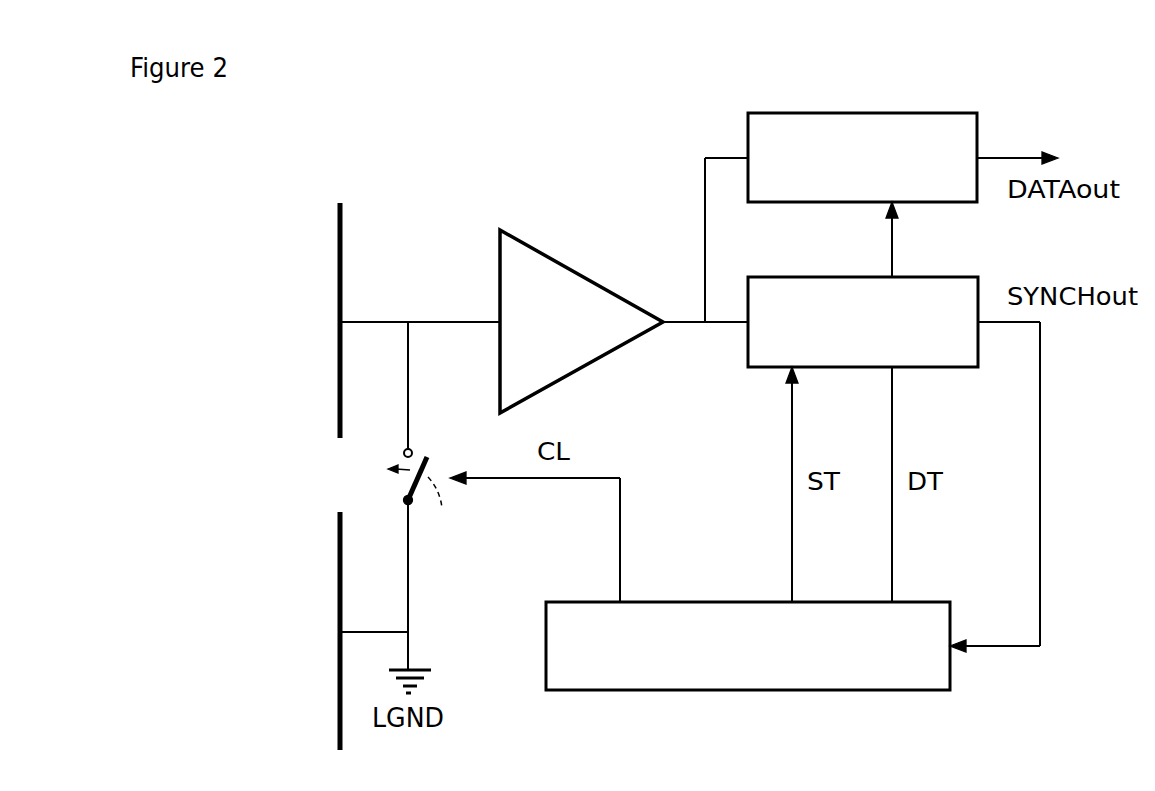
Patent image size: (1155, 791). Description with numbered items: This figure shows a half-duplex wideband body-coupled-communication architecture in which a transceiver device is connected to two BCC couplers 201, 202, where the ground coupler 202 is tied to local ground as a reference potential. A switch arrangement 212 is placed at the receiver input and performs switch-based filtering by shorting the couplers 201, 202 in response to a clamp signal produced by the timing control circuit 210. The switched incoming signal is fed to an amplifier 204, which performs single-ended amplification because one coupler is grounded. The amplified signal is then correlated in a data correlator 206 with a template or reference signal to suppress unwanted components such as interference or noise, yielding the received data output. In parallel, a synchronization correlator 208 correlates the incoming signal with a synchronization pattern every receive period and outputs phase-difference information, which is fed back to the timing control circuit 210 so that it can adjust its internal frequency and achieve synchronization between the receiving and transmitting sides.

The BCC coupler 201 is at (340, 243).
The ground coupler 202 is at (340, 703).
The amplifier 204 is at (573, 270).
The data correlator 206 is at (862, 113).
The synchronization correlator 208 is at (748, 355).
The timing control circuit 210 is at (703, 602).
The switch arrangement 212 is at (404, 490).